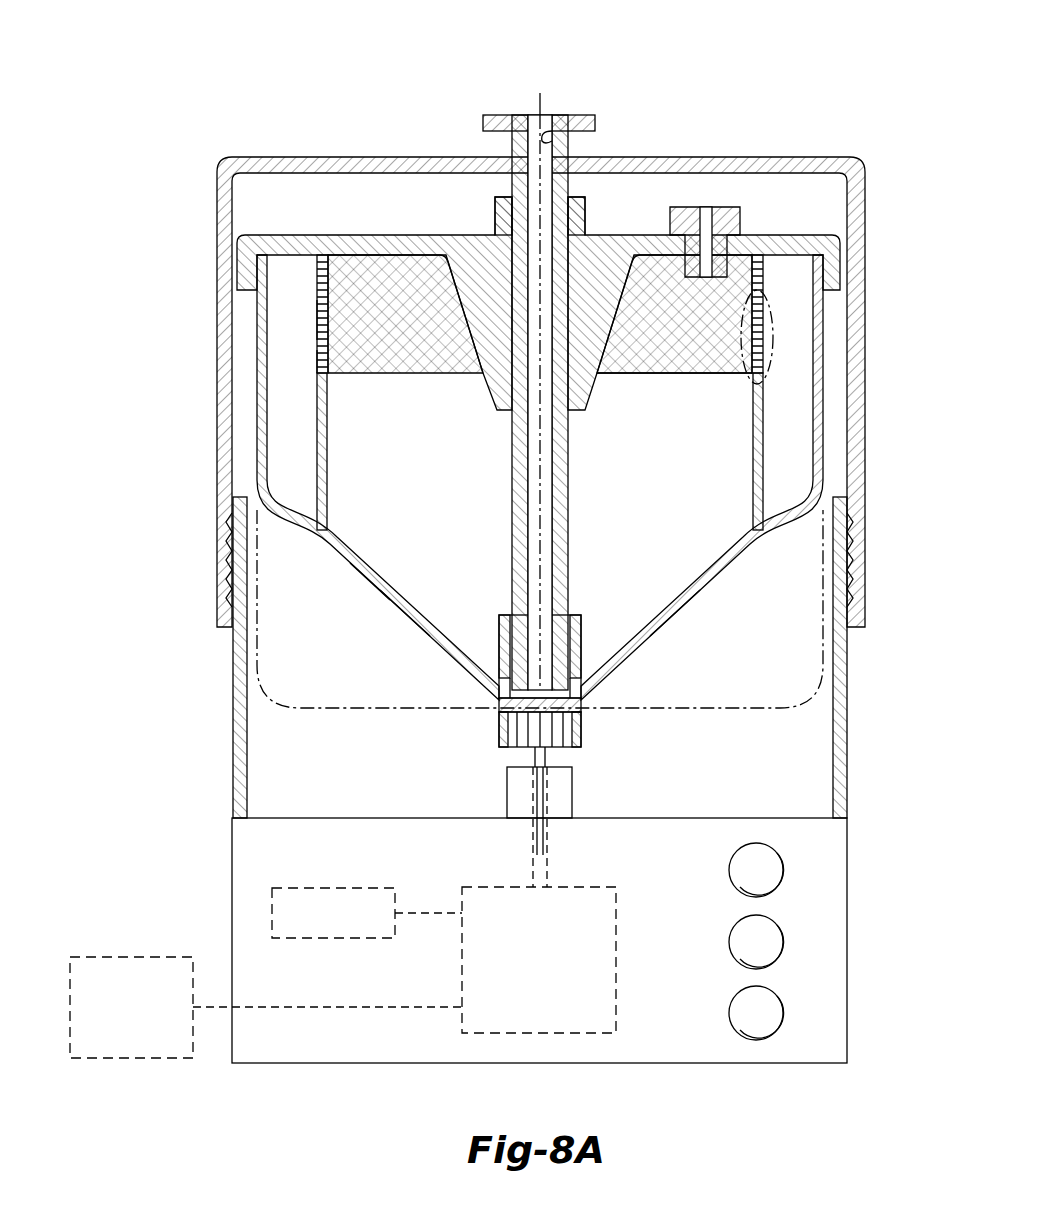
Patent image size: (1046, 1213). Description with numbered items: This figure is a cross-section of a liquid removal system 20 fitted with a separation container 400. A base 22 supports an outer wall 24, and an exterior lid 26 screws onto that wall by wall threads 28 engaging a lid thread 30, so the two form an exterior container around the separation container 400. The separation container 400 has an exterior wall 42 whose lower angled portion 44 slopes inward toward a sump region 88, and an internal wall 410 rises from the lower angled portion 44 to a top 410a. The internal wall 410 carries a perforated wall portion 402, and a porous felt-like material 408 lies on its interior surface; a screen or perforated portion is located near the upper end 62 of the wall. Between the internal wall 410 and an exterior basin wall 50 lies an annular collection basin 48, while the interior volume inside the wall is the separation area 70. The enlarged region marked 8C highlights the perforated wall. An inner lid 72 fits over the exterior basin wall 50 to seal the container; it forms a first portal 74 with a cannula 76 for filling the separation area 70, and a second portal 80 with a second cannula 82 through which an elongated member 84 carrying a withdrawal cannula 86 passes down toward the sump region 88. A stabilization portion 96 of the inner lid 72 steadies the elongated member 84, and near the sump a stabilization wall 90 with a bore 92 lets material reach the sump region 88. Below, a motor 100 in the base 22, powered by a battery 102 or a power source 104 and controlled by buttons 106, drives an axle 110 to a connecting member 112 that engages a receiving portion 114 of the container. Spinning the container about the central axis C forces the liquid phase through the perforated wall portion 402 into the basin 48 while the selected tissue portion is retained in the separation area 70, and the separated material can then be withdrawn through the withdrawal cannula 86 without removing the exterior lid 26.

The liquid removal system 20 is at (378, 122).
The base 22 is at (840, 878).
The outer wall 24 is at (850, 722).
The exterior lid 26 is at (865, 400).
The wall threads 28 is at (850, 598).
The lid thread 30 is at (840, 580).
The exterior wall 42 is at (393, 620).
The lower angled portion 44 is at (422, 645).
The annular collection basin 48 is at (304, 469).
The exterior basin wall 50 is at (255, 427).
The upper end 62 is at (325, 262).
The separation area 70 is at (656, 506).
The inner lid 72 is at (280, 235).
The first portal 74 is at (683, 205).
The cannula 76 is at (707, 217).
The second portal 80 is at (495, 212).
The second cannula 82 is at (568, 228).
The elongated member 84 is at (483, 122).
The withdrawal cannula 86 is at (552, 139).
The sump region 88 is at (565, 698).
The stabilization wall 90 is at (581, 630).
The bore 92 is at (500, 688).
The stabilization portion 96 is at (595, 378).
The motor 100 is at (616, 965).
The battery 102 is at (309, 886).
The power source 104 is at (122, 955).
The control buttons 106 is at (776, 998).
The axle 110 is at (548, 853).
The connecting member 112 is at (565, 745).
The receiving portion 114 is at (499, 730).
The separation container 400 is at (680, 632).
The perforated wall portion 402 is at (335, 313).
The material 408 is at (322, 333).
The internal wall 410 is at (327, 483).
The top of the internal wall 410a is at (322, 365).
The central axis C is at (540, 103).
The detail view 8C is at (745, 385).